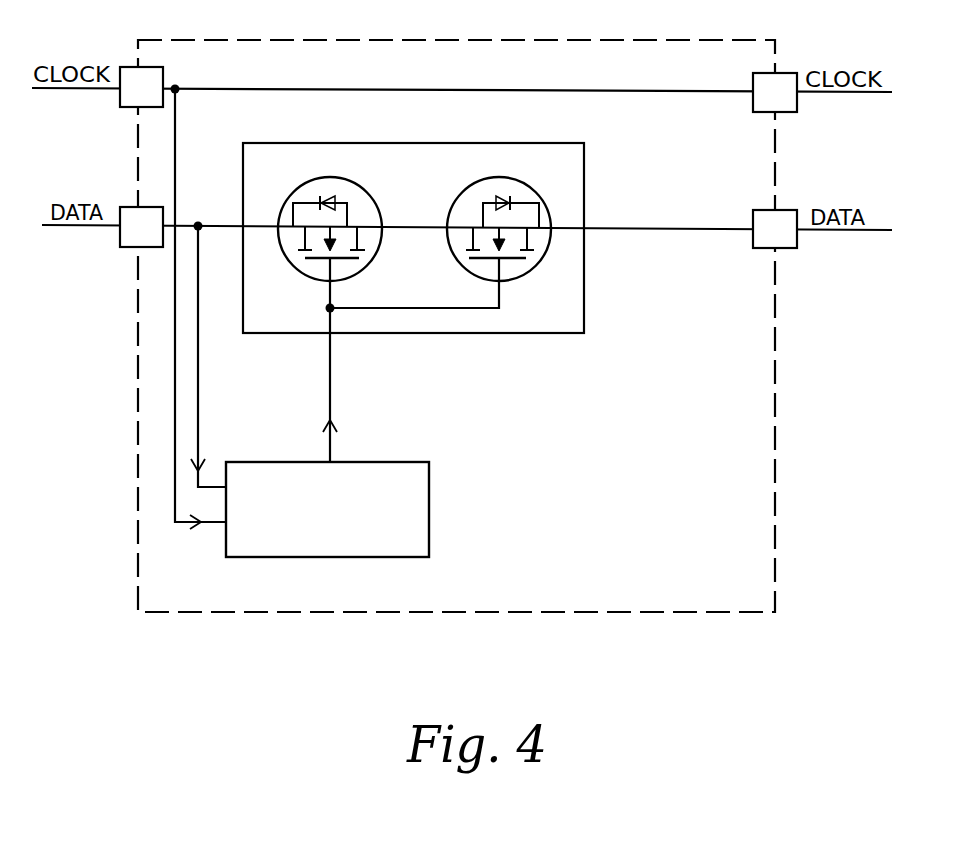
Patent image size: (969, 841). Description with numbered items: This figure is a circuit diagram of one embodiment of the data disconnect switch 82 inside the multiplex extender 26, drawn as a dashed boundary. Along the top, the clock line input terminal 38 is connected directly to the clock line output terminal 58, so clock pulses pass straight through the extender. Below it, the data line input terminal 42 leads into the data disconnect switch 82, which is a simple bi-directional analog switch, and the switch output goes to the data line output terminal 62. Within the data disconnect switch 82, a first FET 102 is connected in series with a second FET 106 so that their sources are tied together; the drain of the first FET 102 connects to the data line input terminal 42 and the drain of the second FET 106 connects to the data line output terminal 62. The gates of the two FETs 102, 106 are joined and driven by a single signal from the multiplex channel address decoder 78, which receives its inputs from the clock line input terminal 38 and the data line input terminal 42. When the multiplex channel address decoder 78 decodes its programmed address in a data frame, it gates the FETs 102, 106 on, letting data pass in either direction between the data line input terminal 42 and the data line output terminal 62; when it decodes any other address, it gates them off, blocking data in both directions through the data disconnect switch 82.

The multiplex extender 26 is at (131, 321).
The clock line input terminal 38 is at (118, 97).
The data line input terminal 42 is at (118, 237).
The clock line output terminal 58 is at (797, 103).
The data line output terminal 62 is at (797, 242).
The multiplex channel address decoder 78 is at (429, 498).
The data disconnect switch 82 is at (468, 338).
The first FET 102 is at (362, 186).
The second FET 106 is at (552, 247).